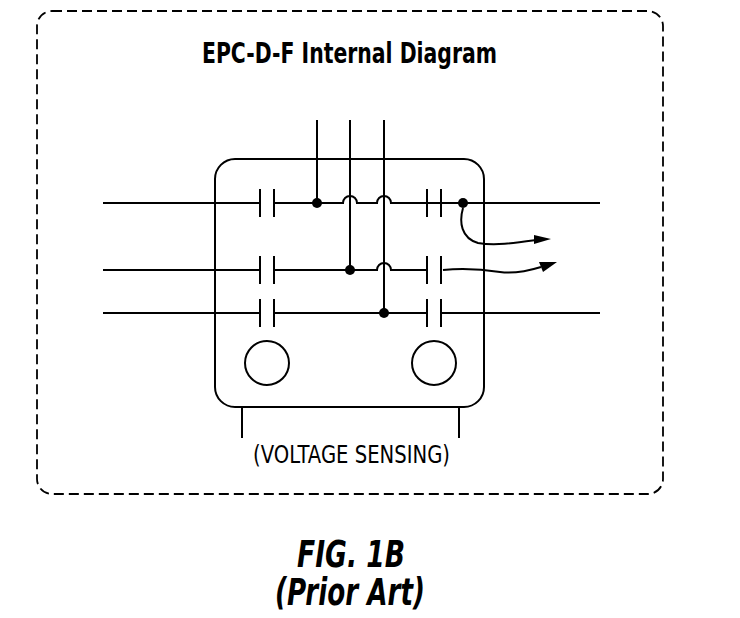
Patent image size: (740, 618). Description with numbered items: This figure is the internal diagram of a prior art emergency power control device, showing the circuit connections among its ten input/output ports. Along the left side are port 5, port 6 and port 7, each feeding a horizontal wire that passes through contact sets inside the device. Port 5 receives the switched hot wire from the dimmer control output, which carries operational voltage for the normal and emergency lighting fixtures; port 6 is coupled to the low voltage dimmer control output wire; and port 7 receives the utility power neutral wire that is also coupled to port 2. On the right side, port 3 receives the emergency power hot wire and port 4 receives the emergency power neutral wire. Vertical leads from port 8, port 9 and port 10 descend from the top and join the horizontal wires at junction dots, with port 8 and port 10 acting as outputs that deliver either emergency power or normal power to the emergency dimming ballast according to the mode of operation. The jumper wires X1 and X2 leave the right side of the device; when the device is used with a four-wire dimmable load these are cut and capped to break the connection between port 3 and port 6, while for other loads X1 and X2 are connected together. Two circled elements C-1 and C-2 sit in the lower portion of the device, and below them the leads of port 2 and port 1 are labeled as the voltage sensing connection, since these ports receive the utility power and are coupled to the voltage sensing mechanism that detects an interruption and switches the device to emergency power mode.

The port 1 is at (460, 438).
The port 2 is at (243, 438).
The port 3 is at (522, 204).
The port 4 is at (522, 313).
The port 5 is at (284, 204).
The port 6 is at (262, 271).
The port 7 is at (255, 313).
The port 8 is at (317, 150).
The port 9 is at (349, 183).
The port 10 is at (385, 205).
The X1 jumper wire X1 is at (500, 281).
The X2 jumper wire X2 is at (506, 226).
The element C-1 is at (267, 363).
The element C-2 is at (434, 363).